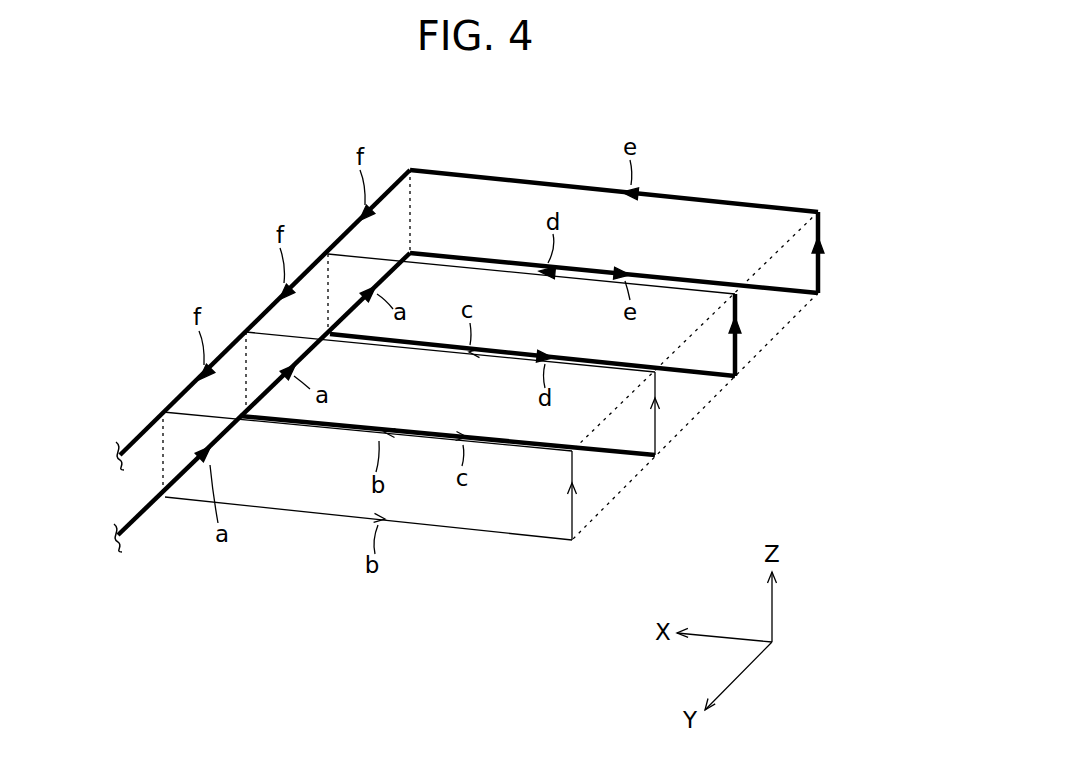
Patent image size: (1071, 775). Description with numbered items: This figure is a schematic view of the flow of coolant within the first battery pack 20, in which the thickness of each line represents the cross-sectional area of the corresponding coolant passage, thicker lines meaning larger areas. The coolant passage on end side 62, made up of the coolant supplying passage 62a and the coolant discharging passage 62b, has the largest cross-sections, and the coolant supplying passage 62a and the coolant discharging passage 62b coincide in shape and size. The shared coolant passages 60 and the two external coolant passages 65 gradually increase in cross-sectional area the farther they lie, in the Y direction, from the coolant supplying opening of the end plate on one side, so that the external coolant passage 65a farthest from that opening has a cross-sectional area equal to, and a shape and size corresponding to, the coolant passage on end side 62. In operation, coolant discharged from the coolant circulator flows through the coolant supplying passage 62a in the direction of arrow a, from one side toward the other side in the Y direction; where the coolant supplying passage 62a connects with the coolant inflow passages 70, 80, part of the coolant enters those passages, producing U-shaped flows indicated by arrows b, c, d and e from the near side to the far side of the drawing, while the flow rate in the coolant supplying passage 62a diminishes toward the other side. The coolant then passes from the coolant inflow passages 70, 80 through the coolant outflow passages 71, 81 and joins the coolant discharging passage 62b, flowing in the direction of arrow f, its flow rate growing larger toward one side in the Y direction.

The first battery pack 20 is at (529, 320).
The shared coolant passages 60 is at (738, 348).
The coolant passage on end side 62 is at (263, 307).
The coolant supplying passage 62a is at (152, 506).
The coolant discharging passage 62b is at (147, 427).
The external coolant passages 65 is at (822, 267).
The external coolant passage 65a is at (753, 200).
The coolant inflow passage 70 is at (540, 352).
The coolant outflow passage 71 is at (441, 266).
The coolant inflow passage 80 is at (698, 278).
The coolant outflow passage 81 is at (493, 182).